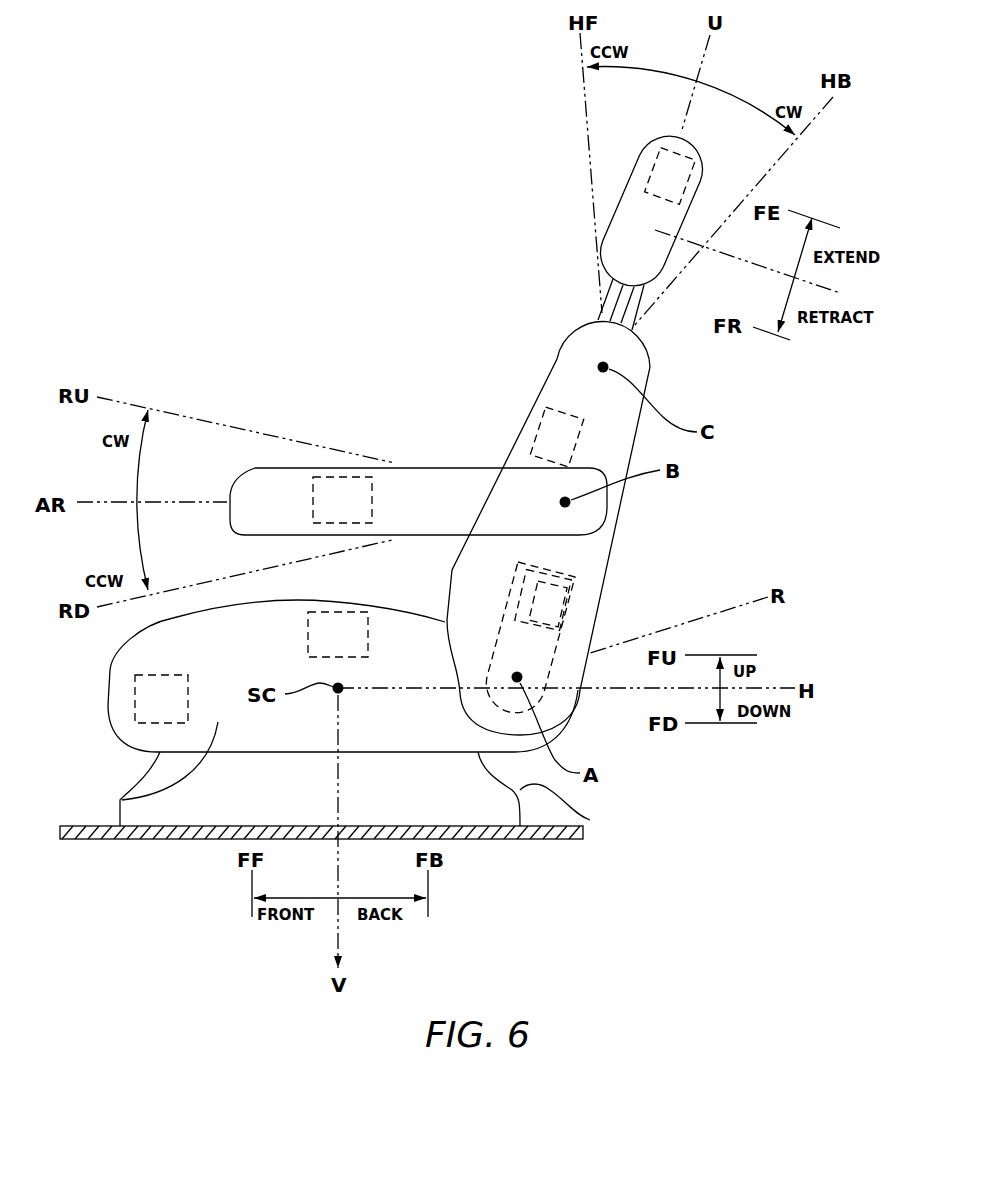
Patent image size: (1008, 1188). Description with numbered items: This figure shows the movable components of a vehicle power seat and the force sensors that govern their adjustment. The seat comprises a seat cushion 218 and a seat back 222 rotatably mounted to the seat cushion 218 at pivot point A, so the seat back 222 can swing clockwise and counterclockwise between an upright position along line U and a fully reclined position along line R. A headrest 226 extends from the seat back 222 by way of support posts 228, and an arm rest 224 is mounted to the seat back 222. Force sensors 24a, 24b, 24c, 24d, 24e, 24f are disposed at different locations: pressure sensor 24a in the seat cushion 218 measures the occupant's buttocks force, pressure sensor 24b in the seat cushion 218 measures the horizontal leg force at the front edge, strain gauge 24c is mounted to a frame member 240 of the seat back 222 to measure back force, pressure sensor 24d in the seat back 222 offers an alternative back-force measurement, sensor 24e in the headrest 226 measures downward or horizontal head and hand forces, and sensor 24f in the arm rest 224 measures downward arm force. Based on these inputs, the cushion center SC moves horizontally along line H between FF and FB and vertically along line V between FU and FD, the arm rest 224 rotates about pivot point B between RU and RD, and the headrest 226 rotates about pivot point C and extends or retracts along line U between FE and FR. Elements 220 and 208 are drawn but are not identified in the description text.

The headrest 226 is at (622, 208).
The support posts 228 is at (602, 310).
The seat back 222 is at (548, 378).
The arm rest 224 is at (418, 467).
The force sensor 24a is at (341, 612).
The force sensor 24b is at (135, 700).
The force sensor 24c is at (568, 625).
The pressure sensor 24d is at (530, 437).
The force sensor 24e is at (687, 193).
The force sensor 24f is at (343, 477).
The frame member 240 is at (592, 594).
The seat cushion 218 is at (120, 797).
The rear seat leg 220 is at (590, 820).
The vehicle floor 208 is at (178, 840).